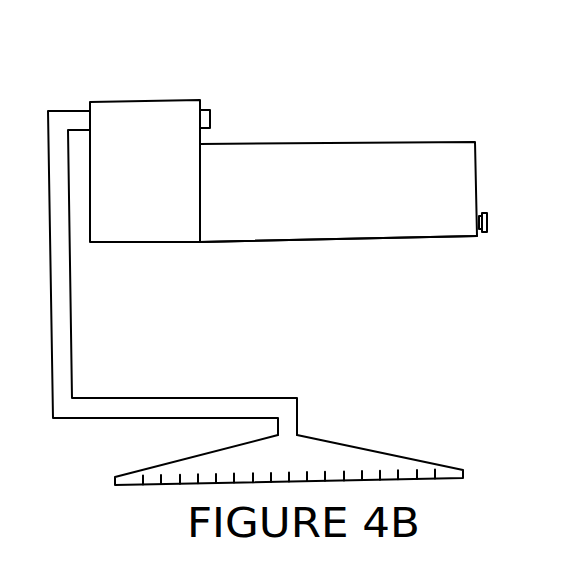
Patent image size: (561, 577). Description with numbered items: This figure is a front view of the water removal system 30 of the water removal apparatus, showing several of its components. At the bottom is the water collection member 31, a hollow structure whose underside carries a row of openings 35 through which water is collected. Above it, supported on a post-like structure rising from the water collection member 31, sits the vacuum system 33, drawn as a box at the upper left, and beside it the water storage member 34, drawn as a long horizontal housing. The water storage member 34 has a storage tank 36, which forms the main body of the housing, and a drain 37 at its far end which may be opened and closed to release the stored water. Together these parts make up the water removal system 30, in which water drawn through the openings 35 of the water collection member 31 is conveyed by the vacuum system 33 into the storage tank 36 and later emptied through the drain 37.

The water removal system 30 is at (267, 286).
The water collection member 31 is at (357, 435).
The vacuum system 33 is at (137, 92).
The water storage member 34 is at (299, 252).
The openings 35 is at (155, 492).
The storage tank 36 is at (342, 211).
The drain 37 is at (483, 244).